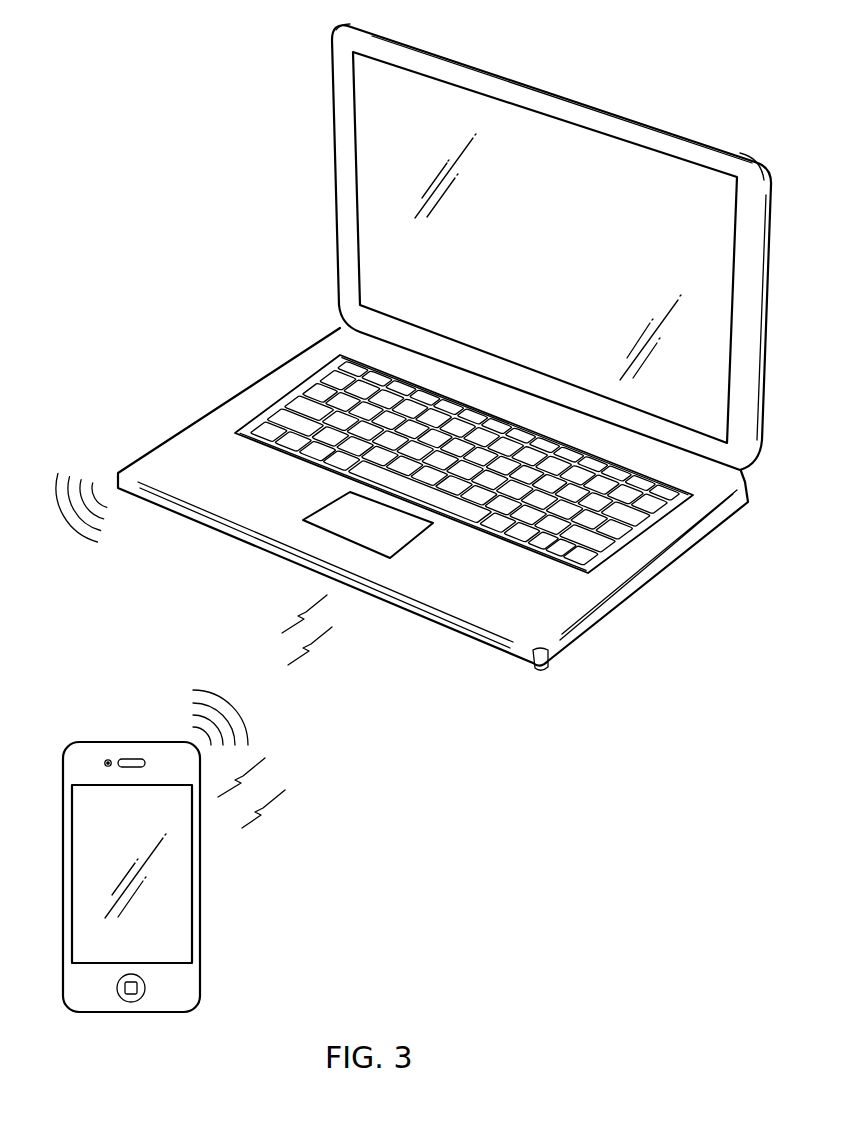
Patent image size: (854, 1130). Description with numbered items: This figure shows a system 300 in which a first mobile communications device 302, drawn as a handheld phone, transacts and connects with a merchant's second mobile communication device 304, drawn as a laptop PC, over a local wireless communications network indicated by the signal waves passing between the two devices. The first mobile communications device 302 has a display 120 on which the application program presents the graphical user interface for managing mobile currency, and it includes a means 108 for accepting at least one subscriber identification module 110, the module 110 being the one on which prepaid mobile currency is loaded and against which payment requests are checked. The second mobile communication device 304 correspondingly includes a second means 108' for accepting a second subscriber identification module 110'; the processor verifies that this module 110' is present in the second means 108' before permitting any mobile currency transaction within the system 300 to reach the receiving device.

The system 300 is at (114, 149).
The second means for accepting at least one subscriber identification module 108' is at (508, 247).
The second mobile communication device 304 is at (622, 103).
The second subscriber identification module 110' is at (433, 509).
The first mobile communications device 302 is at (90, 742).
The means for accepting at least one subscriber identification module 108 is at (173, 878).
The display 120 is at (165, 908).
The subscriber identification module 110 is at (126, 1023).